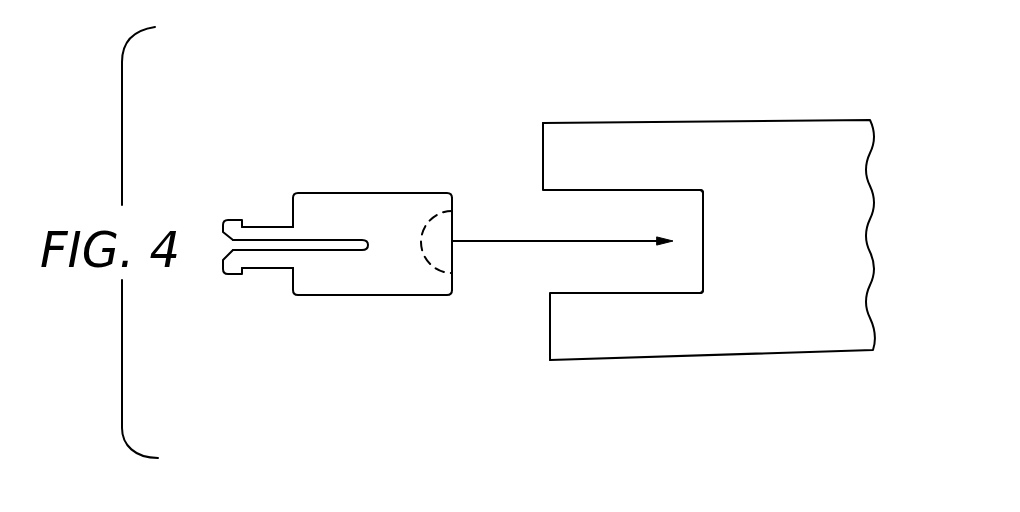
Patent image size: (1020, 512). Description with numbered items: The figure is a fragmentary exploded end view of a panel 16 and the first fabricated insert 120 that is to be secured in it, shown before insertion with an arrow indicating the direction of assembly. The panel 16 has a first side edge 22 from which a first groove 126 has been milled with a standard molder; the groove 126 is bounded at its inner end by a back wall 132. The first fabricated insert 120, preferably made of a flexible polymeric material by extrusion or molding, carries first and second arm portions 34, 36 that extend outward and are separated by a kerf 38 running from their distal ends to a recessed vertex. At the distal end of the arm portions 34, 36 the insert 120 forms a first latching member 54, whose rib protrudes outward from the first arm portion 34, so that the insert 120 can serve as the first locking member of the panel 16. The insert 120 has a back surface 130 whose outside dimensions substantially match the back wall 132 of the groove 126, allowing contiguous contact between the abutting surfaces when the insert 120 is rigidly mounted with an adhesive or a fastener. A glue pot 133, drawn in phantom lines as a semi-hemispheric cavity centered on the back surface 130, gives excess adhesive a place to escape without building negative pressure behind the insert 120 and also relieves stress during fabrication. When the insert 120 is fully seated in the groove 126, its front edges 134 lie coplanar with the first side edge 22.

The first panel 16 is at (747, 145).
The first side edge 22 is at (547, 327).
The first arm portion 34 is at (267, 233).
The second arm portion 36 is at (267, 255).
The kerf 38 is at (320, 245).
The first latching member 54 is at (228, 260).
The first fabricated insert 120 is at (348, 208).
The first groove 126 is at (678, 273).
The back surface 130 is at (452, 200).
The back wall 132 is at (705, 217).
The glue pot 133 is at (438, 245).
The front edges 134 is at (291, 277).